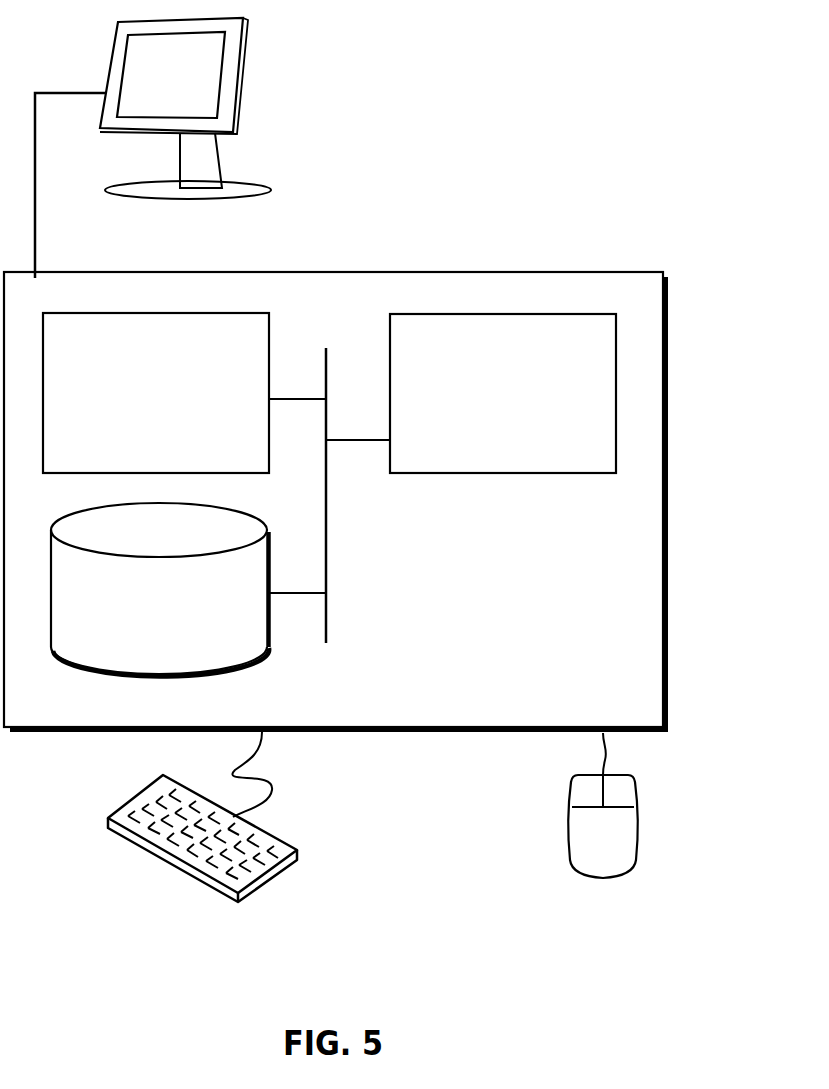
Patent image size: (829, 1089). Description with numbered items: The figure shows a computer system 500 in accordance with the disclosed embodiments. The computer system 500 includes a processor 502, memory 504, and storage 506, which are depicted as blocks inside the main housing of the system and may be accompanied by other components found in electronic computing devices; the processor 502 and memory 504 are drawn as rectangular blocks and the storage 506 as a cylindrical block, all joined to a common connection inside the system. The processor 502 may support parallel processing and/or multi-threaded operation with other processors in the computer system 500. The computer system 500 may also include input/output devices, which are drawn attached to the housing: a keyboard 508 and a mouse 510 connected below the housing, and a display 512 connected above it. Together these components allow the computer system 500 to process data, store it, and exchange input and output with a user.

The computer system 500 is at (379, 250).
The processor 502 is at (527, 408).
The memory 504 is at (178, 408).
The storage 506 is at (184, 617).
The keyboard 508 is at (127, 837).
The mouse 510 is at (626, 848).
The display 512 is at (153, 148).